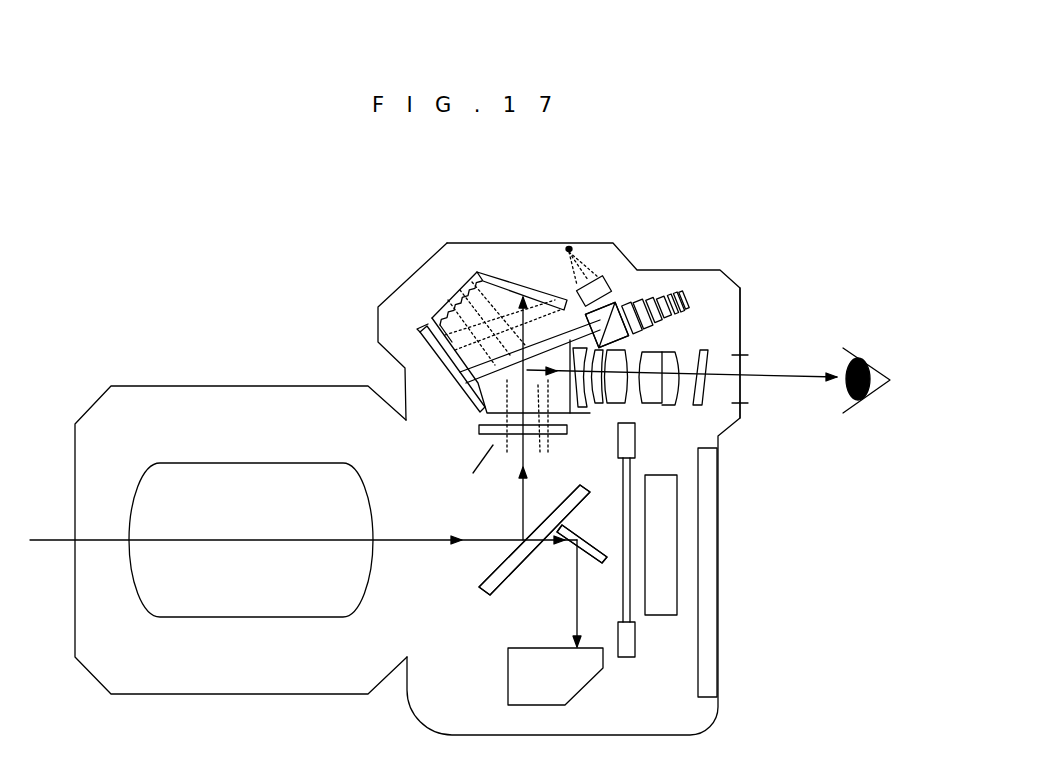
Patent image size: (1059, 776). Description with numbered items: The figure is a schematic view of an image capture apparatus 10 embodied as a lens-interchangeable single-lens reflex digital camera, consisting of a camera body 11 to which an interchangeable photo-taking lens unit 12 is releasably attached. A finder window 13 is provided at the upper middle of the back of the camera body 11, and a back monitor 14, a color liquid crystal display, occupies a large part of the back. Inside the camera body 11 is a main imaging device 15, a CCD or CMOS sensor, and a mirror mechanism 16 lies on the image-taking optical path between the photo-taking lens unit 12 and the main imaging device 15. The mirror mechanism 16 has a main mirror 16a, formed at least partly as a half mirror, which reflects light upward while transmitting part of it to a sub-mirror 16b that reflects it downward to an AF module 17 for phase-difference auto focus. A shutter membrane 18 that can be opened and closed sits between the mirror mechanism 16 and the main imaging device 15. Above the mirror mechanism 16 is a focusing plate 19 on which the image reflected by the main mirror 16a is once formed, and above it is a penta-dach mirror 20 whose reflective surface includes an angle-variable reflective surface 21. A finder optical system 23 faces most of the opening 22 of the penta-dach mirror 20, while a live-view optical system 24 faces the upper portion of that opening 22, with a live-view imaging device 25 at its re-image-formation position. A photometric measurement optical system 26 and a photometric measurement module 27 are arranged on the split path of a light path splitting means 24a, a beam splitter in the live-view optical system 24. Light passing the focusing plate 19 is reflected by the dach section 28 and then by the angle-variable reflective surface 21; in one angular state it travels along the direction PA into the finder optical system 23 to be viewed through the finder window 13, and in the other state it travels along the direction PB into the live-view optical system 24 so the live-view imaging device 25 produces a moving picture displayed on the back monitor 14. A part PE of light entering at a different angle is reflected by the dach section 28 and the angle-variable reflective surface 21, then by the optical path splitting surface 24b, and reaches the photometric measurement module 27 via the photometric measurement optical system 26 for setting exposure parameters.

The image capture apparatus 10 is at (315, 267).
The camera body 11 is at (720, 715).
The photo-taking lens unit 12 is at (226, 386).
The finder window 13 is at (742, 368).
The back monitor 14 is at (720, 562).
The main imaging device 15 is at (662, 533).
The mirror mechanism 16 is at (500, 601).
The main mirror 16a is at (496, 567).
The sub-mirror 16b is at (580, 557).
The AF module 17 is at (548, 687).
The shutter membrane 18 is at (628, 583).
The focusing plate 19 is at (478, 433).
The penta-dach mirror 20 is at (465, 280).
The angle-variable reflective surface 21 is at (423, 331).
The opening 22 is at (573, 310).
The finder optical system 23 is at (662, 418).
The live-view optical system 24 is at (662, 285).
The light path splitting means 24a is at (625, 338).
The optical path splitting surface 24b is at (630, 345).
The live-view imaging device 25 is at (683, 292).
The photometric measurement optical system 26 is at (620, 290).
The photometric measurement module 27 is at (572, 248).
The dach section 28 is at (485, 282).
The part of light PE is at (465, 290).
The finder direction PA is at (572, 430).
The live-view direction PB is at (476, 471).